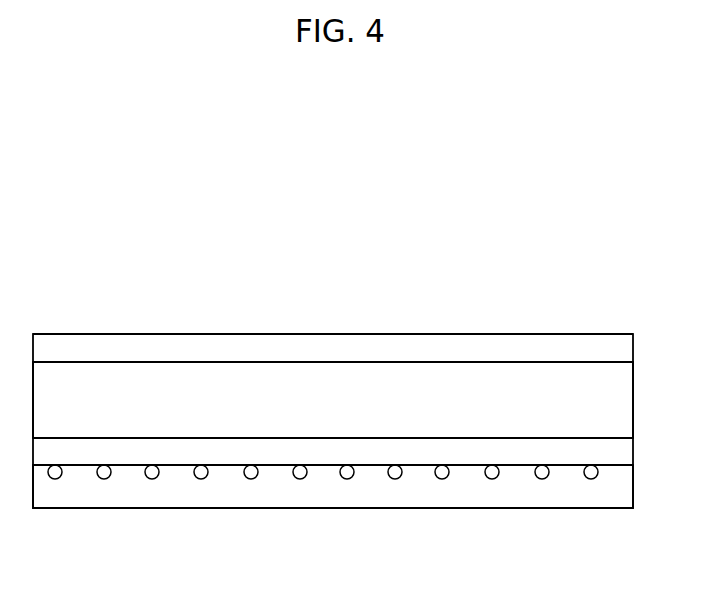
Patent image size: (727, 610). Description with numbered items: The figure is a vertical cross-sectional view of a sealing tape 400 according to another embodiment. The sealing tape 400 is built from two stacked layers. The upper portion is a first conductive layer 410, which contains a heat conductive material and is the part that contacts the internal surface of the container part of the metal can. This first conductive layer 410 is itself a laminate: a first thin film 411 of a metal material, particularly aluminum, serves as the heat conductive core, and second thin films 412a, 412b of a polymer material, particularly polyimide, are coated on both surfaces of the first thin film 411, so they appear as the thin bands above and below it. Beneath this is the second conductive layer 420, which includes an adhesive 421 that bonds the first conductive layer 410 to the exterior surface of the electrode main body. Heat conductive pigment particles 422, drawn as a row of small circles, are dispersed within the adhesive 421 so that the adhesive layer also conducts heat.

The sealing tape 400 is at (85, 287).
The first conductive layer 410 is at (542, 265).
The first thin film 411 is at (478, 387).
The second thin film 412a is at (434, 350).
The second thin film 412b is at (520, 455).
The second conductive layer 420 is at (532, 560).
The adhesive 421 is at (512, 490).
The heat conductive pigment particles 422 is at (442, 472).